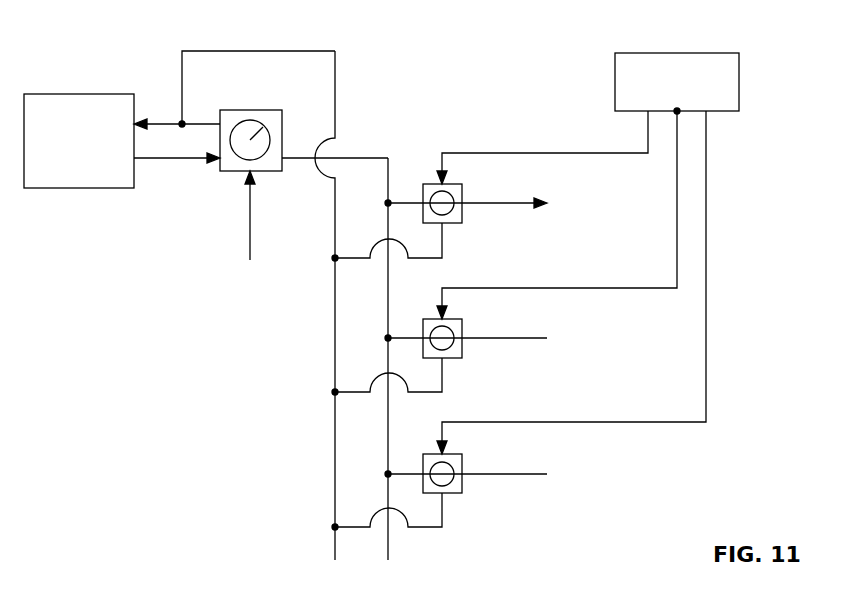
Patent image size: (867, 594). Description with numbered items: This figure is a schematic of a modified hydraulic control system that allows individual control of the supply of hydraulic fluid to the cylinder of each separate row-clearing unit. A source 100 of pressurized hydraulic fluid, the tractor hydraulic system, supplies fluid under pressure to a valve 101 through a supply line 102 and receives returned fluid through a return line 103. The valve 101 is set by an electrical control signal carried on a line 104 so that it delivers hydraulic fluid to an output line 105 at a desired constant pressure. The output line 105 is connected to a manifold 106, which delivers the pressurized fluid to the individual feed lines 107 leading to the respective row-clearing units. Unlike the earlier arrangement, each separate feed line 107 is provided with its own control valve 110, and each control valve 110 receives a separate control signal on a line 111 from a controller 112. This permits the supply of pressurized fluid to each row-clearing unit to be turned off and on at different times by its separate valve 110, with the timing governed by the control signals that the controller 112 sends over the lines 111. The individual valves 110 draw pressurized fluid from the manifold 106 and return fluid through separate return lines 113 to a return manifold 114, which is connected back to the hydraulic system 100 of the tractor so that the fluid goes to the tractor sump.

The source of pressurized hydraulic fluid 100 is at (86, 93).
The valve 101 is at (256, 109).
The supply line 102 is at (157, 162).
The return line 103 is at (165, 122).
The line 104 is at (247, 213).
The output line 105 is at (355, 158).
The manifold 106 is at (388, 302).
The feed line 107 is at (510, 203).
The control valve 110 is at (453, 184).
The line 111 is at (520, 153).
The controller 112 is at (672, 53).
The return line 113 is at (443, 237).
The return manifold 114 is at (335, 460).